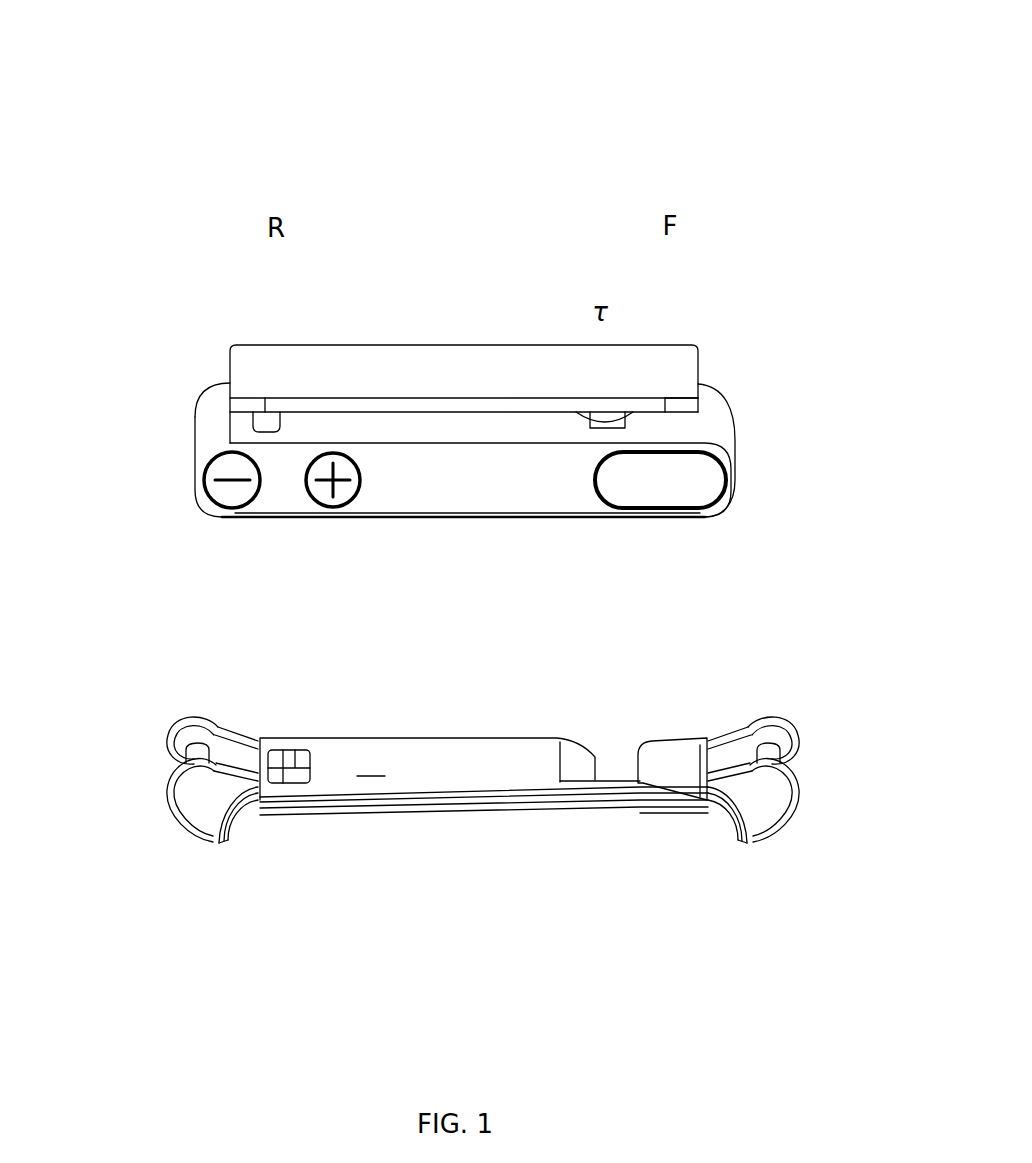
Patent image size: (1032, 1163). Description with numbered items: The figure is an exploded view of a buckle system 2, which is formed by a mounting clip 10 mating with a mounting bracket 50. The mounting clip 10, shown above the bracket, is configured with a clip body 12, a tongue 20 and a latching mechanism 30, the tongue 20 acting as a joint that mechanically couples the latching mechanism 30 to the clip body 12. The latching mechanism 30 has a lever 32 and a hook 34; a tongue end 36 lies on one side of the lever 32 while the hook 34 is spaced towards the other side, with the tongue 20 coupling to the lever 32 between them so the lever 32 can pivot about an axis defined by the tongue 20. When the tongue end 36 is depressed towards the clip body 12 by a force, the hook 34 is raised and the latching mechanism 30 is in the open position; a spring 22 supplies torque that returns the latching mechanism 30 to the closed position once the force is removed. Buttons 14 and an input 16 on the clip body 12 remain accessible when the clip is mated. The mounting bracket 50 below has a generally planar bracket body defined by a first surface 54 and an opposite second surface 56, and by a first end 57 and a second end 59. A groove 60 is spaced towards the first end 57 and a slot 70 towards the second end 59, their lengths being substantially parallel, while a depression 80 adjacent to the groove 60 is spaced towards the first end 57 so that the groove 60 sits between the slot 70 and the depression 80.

The buckle system 2 is at (468, 77).
The mounting clip 10 is at (122, 338).
The clip body 12 is at (440, 482).
The buttons 14 is at (213, 497).
The input 16 is at (688, 483).
The tongue 20 is at (645, 424).
The spring 22 is at (590, 417).
The latching mechanism 30 is at (708, 367).
The lever 32 is at (360, 370).
The hook 34 is at (262, 418).
The tongue end 36 is at (680, 388).
The mounting bracket 50 is at (263, 935).
The first surface 54 is at (440, 765).
The second surface 56 is at (440, 826).
The first end 57 is at (818, 793).
The second end 59 is at (138, 795).
The groove 60 is at (612, 755).
The slot 70 is at (285, 775).
The depression 80 is at (683, 767).